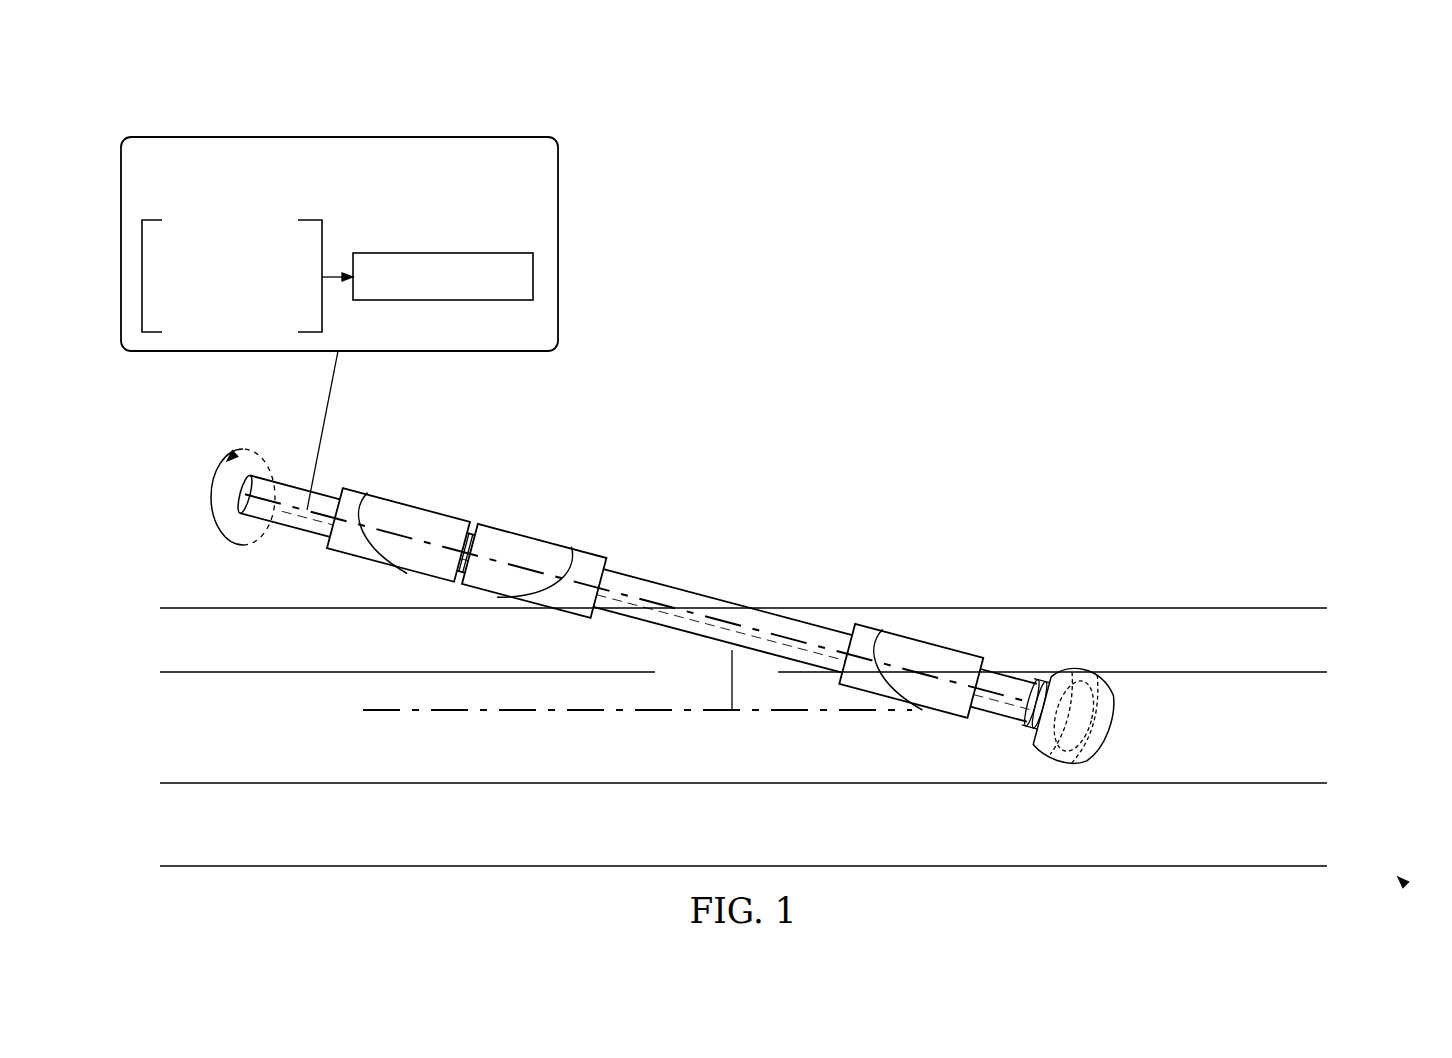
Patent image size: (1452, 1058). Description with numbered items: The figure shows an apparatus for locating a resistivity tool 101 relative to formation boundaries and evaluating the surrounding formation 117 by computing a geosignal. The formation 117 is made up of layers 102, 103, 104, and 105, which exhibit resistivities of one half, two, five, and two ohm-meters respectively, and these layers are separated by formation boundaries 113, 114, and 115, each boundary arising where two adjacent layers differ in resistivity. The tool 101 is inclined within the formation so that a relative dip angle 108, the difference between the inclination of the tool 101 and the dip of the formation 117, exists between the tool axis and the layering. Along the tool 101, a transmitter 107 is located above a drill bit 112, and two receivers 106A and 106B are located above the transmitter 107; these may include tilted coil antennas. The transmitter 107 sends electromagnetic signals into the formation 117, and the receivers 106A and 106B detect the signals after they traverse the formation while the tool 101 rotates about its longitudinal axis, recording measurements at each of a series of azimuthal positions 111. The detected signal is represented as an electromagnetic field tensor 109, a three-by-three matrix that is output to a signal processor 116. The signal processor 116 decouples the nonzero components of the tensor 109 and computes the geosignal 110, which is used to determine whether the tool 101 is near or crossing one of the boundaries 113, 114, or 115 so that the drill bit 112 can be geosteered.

The resistivity tool 101 is at (681, 588).
The layer 102 is at (1310, 606).
The layer 103 is at (1310, 677).
The layer 104 is at (1310, 788).
The layer 105 is at (1310, 872).
The receiver 106A is at (434, 511).
The receiver 106B is at (519, 532).
The transmitter 107 is at (939, 647).
The relative dip angle 108 is at (731, 681).
The electromagnetic field tensor 109 is at (190, 217).
The geosignal 110 is at (443, 252).
The azimuthal positions 111 is at (218, 479).
The drill bit 112 is at (1104, 675).
The formation boundary 113 is at (180, 608).
The formation boundary 114 is at (180, 672).
The formation boundary 115 is at (180, 783).
The signal processor 116 is at (217, 136).
The formation 117 is at (1401, 880).